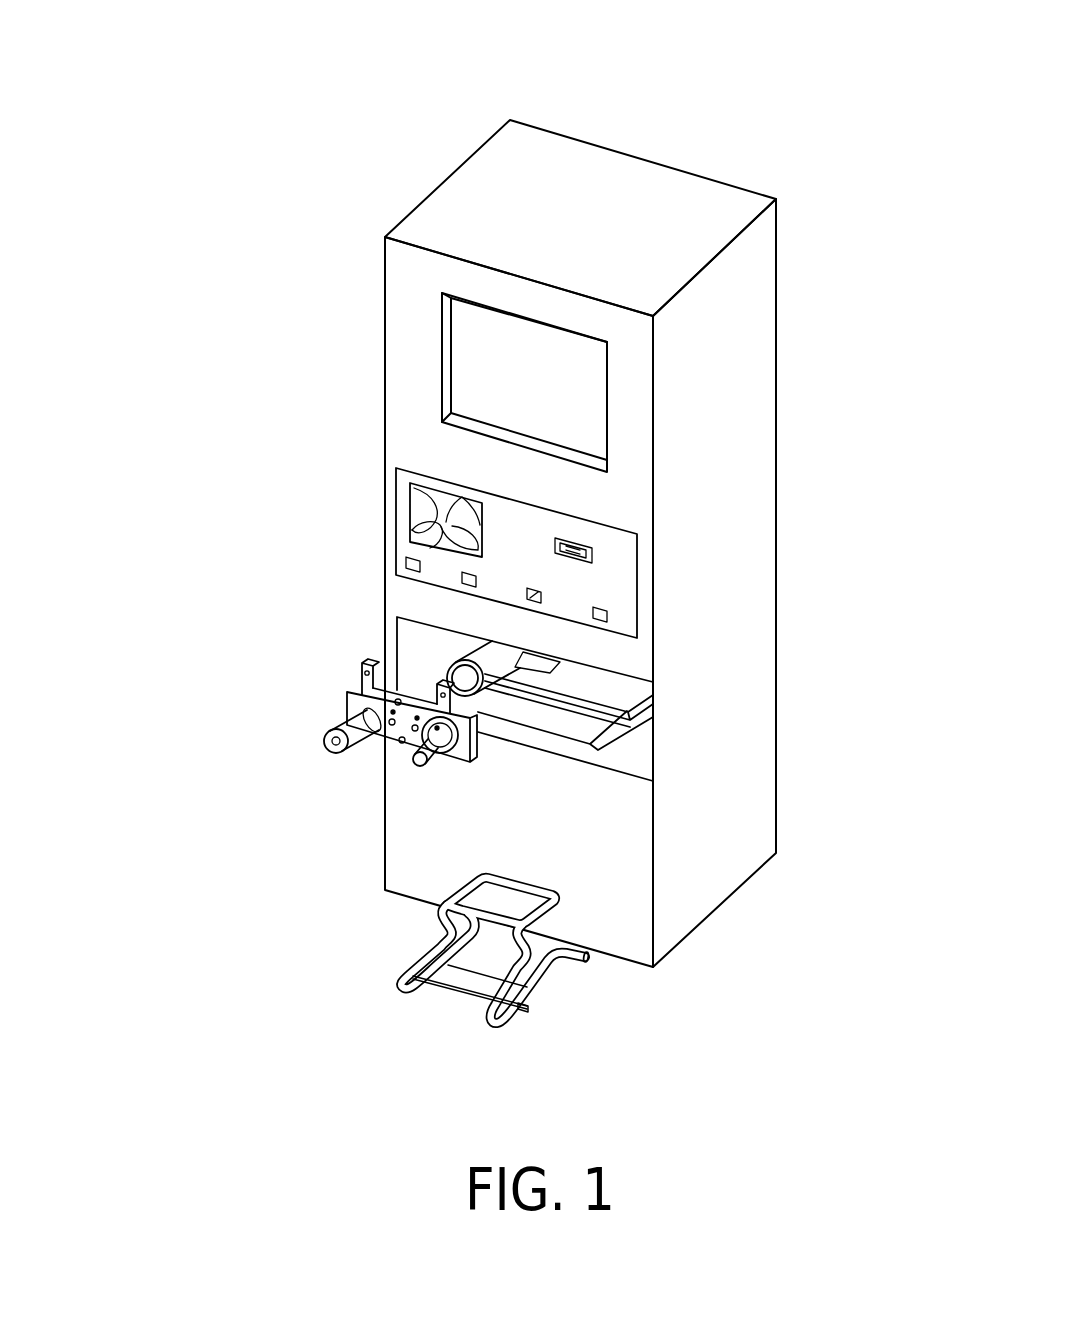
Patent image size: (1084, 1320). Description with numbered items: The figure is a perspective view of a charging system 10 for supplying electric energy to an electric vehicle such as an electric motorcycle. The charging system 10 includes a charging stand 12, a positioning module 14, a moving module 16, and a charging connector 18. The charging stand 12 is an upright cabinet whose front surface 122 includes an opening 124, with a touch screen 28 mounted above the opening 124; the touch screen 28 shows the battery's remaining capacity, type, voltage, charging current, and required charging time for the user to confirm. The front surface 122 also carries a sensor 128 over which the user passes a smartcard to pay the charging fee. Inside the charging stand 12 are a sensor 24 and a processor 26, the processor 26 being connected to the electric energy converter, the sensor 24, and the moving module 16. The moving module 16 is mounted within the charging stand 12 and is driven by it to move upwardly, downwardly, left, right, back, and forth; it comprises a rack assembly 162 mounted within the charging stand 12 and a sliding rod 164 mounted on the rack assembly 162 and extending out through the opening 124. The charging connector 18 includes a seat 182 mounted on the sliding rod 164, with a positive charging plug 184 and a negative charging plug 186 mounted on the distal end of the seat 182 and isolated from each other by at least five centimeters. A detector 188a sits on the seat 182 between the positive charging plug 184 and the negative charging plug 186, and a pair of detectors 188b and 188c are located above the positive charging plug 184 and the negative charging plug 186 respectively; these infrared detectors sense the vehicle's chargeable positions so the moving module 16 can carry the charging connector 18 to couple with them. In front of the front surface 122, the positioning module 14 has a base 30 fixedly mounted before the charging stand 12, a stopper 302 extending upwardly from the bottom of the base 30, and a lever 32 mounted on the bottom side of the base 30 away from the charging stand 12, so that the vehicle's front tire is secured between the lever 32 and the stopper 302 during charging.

The charging system 10 is at (705, 140).
The charging stand 12 is at (482, 140).
The front surface 122 is at (395, 337).
The opening 124 is at (402, 658).
The sensor 128 is at (413, 505).
The touch screen 28 is at (585, 408).
The sensor 24 is at (541, 594).
The moving module 16 is at (458, 647).
The rack assembly 162 is at (635, 690).
The sliding rod 164 is at (450, 653).
The charging connector 18 is at (347, 690).
The seat 182 is at (387, 740).
The positive charging plug 184 is at (337, 738).
The negative charging plug 186 is at (418, 760).
The detector 188a is at (363, 697).
The detector 188b is at (363, 678).
The detector 188c is at (480, 668).
The processor 26 is at (642, 743).
The positioning module 14 is at (432, 942).
The stopper 302 is at (518, 882).
The base 30 is at (543, 972).
The lever 32 is at (525, 1010).